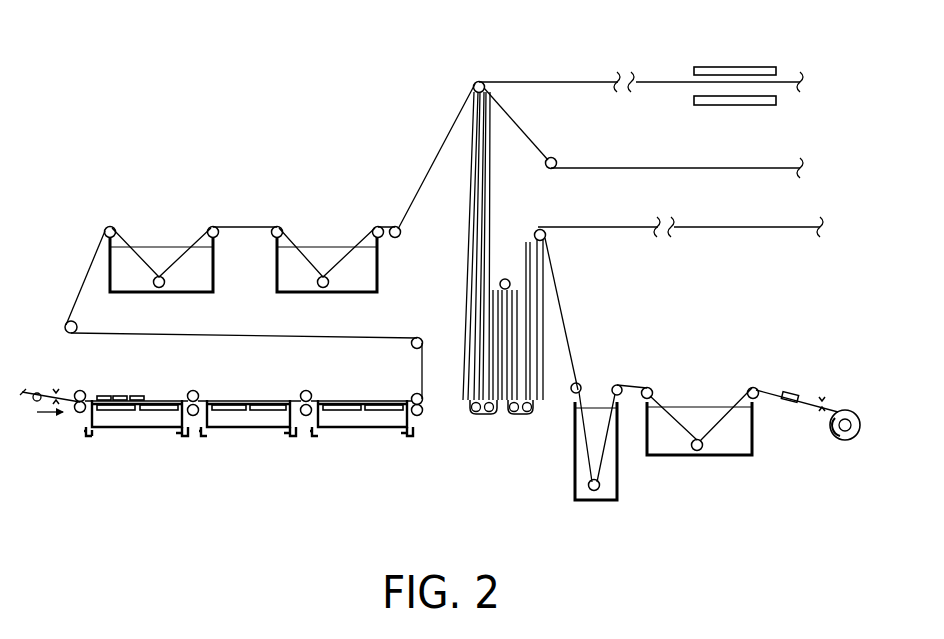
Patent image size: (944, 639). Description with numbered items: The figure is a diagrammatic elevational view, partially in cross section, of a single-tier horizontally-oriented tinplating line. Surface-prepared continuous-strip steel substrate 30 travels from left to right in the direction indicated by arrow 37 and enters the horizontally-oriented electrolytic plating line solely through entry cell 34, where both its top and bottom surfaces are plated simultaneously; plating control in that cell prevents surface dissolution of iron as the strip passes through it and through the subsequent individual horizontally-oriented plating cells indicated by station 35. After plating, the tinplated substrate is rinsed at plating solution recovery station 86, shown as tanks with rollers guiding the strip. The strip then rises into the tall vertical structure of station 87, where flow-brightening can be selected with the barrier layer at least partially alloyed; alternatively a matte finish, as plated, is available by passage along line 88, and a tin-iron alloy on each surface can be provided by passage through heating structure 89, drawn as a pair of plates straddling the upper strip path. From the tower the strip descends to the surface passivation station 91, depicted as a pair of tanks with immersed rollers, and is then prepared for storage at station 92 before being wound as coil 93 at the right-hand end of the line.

The continuous-strip steel substrate 30 is at (66, 394).
The arrow 37 is at (60, 414).
The entry cell 34 is at (133, 442).
The station of individual horizontally-oriented plating cells 35 is at (268, 480).
The plating solution recovery station 86 is at (156, 196).
The flow-brightening station 87 is at (453, 309).
The line 88 is at (737, 167).
The heating structure 89 is at (736, 57).
The surface passivation station 91 is at (667, 518).
The storage preparation station 92 is at (823, 385).
The coil 93 is at (848, 441).